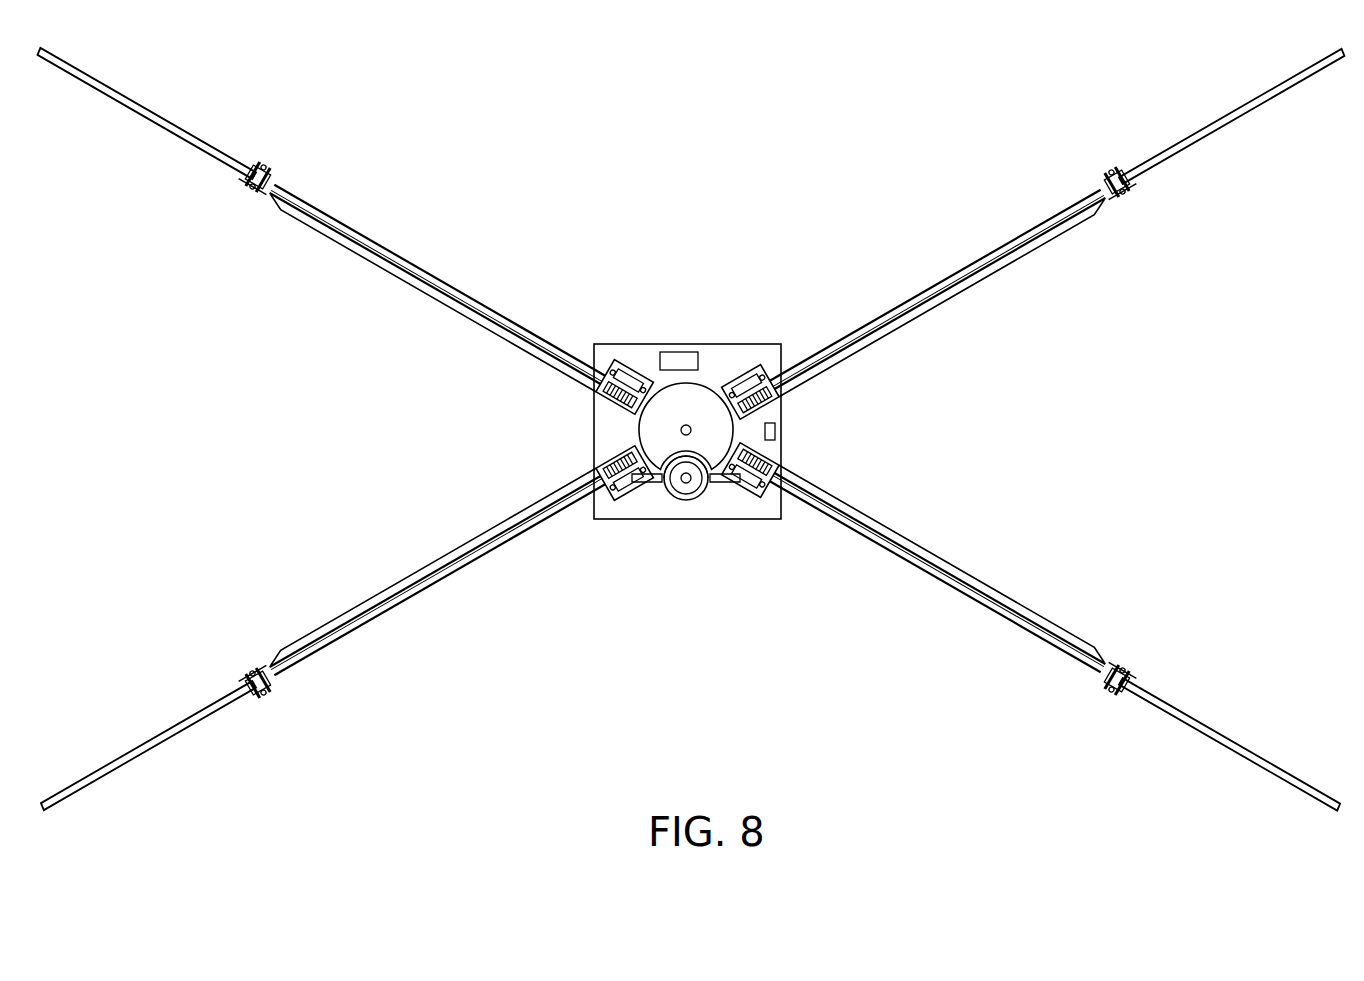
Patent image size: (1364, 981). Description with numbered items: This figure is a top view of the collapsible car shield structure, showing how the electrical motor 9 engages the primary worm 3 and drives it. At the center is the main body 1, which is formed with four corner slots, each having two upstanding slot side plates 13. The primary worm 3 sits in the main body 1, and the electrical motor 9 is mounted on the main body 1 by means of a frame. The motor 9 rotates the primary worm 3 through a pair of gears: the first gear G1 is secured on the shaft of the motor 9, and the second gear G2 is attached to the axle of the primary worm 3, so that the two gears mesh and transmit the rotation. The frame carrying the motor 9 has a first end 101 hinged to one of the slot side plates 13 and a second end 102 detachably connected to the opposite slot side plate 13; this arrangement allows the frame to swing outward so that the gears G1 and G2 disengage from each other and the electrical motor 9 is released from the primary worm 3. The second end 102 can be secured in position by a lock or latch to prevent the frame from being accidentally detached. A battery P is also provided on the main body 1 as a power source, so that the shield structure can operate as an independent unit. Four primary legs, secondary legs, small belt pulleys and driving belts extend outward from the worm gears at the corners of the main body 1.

The main body 1 is at (608, 352).
The primary worm 3 is at (672, 396).
The electrical motor 9 is at (687, 502).
The slot side plate 13 is at (752, 368).
The battery P is at (683, 360).
The first end 101 is at (648, 486).
The second end 102 is at (732, 486).
The first gear G1 is at (678, 488).
The second gear G2 is at (713, 492).